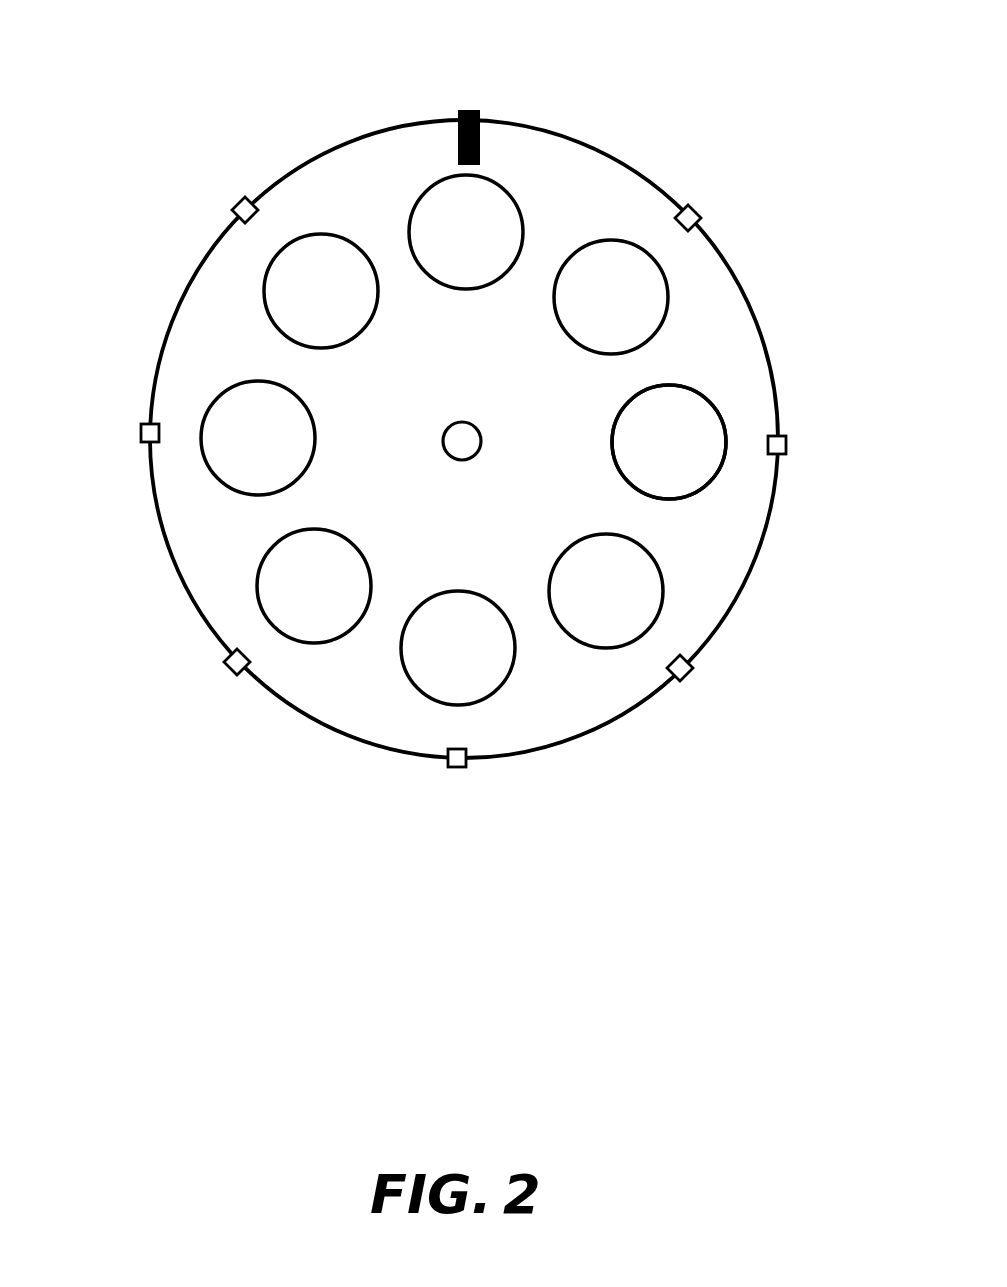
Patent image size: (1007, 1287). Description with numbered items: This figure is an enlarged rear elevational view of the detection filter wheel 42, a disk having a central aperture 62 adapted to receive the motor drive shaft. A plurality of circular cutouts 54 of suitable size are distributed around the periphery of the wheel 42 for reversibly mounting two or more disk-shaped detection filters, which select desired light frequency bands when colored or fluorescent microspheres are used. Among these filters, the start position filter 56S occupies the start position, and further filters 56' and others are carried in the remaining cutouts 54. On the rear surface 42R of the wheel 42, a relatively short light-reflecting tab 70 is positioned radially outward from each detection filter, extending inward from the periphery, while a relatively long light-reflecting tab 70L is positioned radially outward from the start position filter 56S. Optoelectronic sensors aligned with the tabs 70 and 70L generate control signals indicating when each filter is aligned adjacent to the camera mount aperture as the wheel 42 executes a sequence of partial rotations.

The detection filter wheel 42 is at (152, 380).
The rear surface 42R is at (444, 364).
The circular cutouts 54 is at (410, 237).
The start position filter 56S is at (466, 232).
The detection filter 56' is at (611, 297).
The central aperture 62 is at (453, 450).
The light-reflecting tab 70 is at (697, 207).
The long light-reflecting tab 70L is at (468, 108).